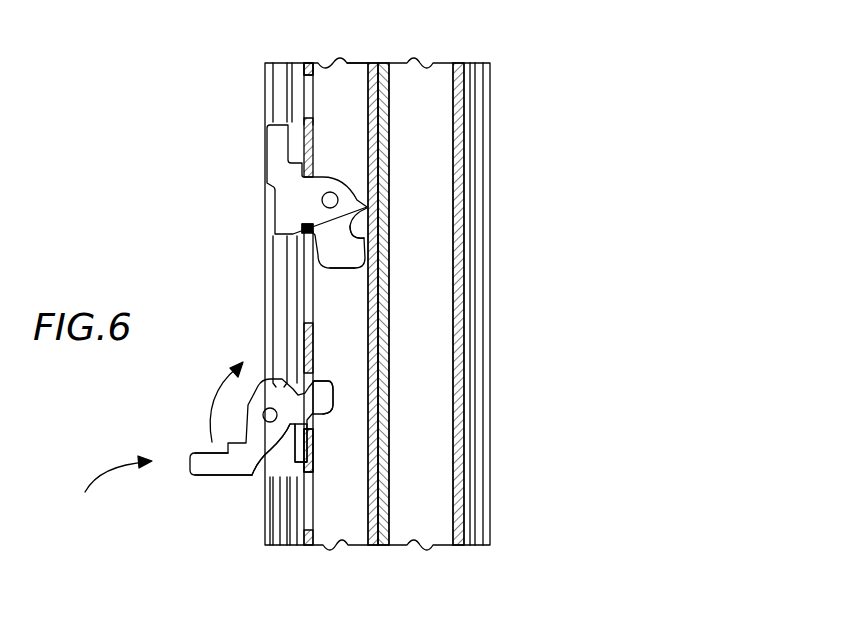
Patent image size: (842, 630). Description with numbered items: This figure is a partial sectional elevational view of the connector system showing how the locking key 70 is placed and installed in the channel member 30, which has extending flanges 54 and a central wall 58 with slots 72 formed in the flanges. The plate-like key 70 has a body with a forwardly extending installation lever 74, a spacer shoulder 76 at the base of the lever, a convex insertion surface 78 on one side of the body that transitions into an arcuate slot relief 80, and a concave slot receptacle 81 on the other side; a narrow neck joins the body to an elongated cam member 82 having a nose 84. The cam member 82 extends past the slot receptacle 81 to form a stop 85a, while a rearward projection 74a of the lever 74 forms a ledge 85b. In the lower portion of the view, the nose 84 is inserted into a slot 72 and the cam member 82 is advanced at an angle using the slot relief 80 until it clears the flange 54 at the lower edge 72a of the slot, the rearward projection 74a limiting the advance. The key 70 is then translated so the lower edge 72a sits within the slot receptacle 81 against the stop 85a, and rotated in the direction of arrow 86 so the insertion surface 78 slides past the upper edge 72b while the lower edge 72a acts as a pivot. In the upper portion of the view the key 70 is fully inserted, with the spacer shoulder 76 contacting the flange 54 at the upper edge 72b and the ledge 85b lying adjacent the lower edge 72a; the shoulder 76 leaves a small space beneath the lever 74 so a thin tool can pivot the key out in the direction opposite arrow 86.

The channel member 30 is at (375, 279).
The extending flange 54 is at (335, 60).
The central wall 58 is at (355, 62).
The locking key 70 is at (108, 483).
The slot 72 is at (313, 320).
The lower edge of the slot 72a is at (337, 442).
The upper edge of the slot 72b is at (345, 405).
The installation lever 74 is at (248, 475).
The rearward projection 74a is at (293, 528).
The spacer shoulder 76 is at (307, 150).
The insertion surface 78 is at (256, 370).
The slot relief 80 is at (372, 238).
The slot receptacle 81 is at (310, 231).
The cam member 82 is at (337, 268).
The nose 84 is at (340, 403).
The stop 85a is at (292, 503).
The ledge 85b is at (368, 205).
The arrow 86 is at (210, 420).